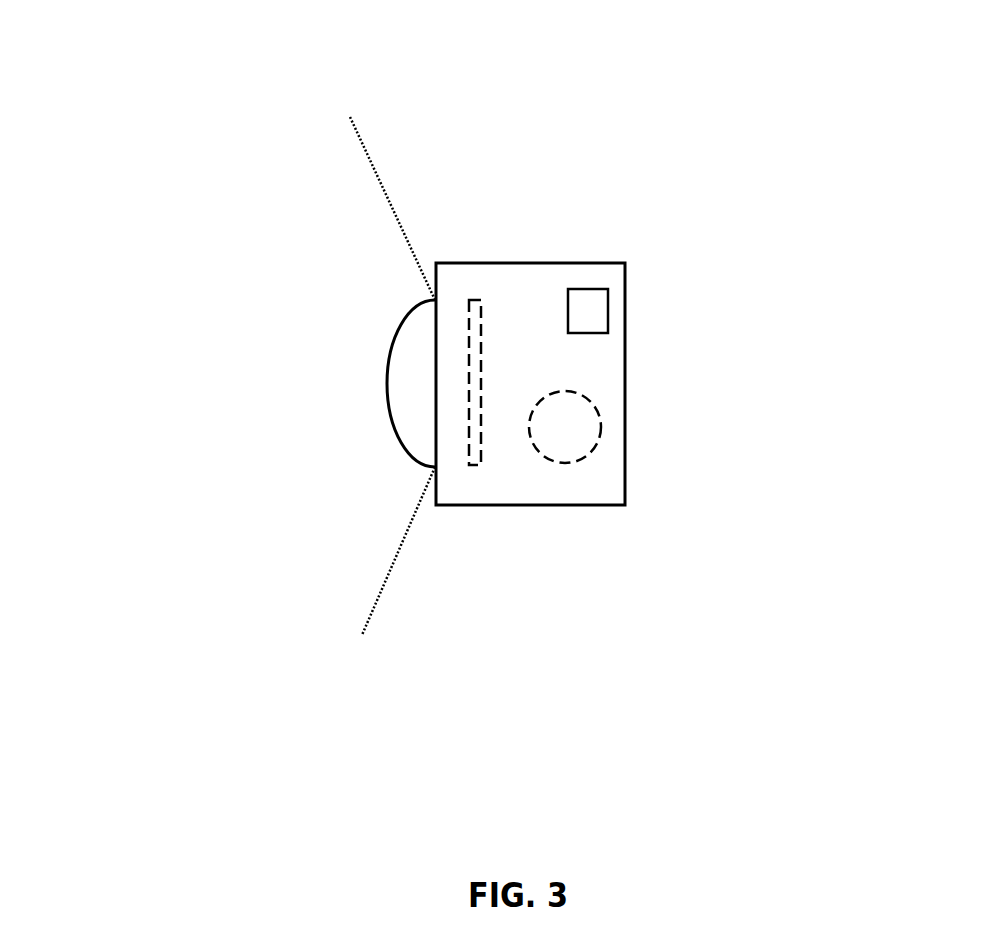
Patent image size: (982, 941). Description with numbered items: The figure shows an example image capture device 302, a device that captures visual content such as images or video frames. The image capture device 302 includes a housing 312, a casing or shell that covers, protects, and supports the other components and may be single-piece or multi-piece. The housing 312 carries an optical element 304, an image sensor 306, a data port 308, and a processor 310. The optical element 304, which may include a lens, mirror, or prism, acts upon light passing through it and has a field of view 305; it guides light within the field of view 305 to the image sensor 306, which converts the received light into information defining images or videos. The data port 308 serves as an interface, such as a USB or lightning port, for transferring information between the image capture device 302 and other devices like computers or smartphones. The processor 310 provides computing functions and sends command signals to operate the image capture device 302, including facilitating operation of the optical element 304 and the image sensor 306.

The image capture device 302 is at (589, 133).
The optical element 304 is at (425, 458).
The field of view 305 is at (413, 252).
The image sensor 306 is at (477, 300).
The data port 308 is at (608, 303).
The processor 310 is at (601, 427).
The housing 312 is at (540, 505).